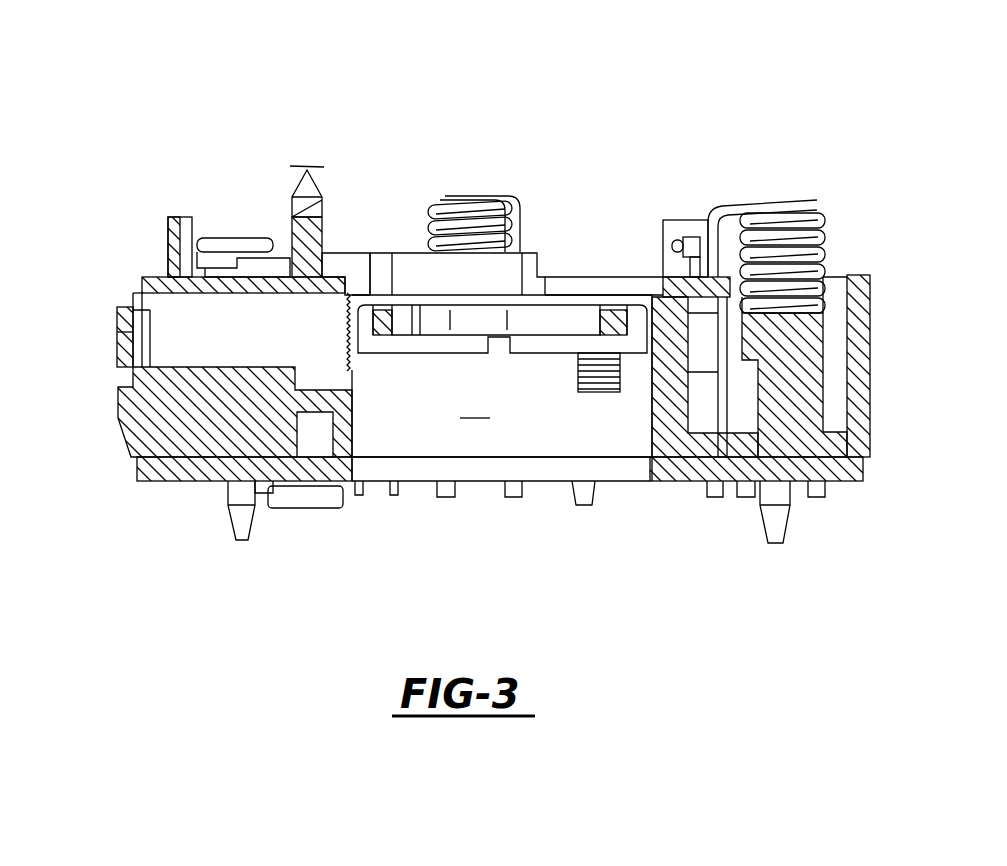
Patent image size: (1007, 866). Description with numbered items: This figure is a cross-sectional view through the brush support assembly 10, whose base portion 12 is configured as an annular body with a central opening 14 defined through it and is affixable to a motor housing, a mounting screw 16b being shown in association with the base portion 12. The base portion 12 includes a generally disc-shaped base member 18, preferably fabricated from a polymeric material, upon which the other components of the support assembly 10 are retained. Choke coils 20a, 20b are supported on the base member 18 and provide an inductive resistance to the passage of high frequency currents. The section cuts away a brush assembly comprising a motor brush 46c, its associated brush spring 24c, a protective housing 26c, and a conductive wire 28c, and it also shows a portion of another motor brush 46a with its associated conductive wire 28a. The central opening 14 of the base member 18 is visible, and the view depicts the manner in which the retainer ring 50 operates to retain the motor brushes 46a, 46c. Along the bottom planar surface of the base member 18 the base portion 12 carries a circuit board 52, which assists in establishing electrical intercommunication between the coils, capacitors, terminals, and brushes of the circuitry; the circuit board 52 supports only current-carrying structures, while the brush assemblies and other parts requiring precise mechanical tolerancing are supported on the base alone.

The support assembly 10 is at (160, 135).
The base portion 12 is at (121, 430).
The central opening 14 is at (502, 367).
The mounting screw 16b is at (305, 167).
The base member 18 is at (873, 338).
The choke coil 20a is at (806, 213).
The choke coil 20b is at (477, 210).
The brush spring 24c is at (122, 345).
The protective housing 26c is at (165, 306).
The conductive wire 28a is at (690, 250).
The conductive wire 28c is at (240, 240).
The motor brush 46a is at (593, 363).
The motor brush 46c is at (140, 300).
The retainer ring 50 is at (412, 325).
The circuit board 52 is at (172, 475).